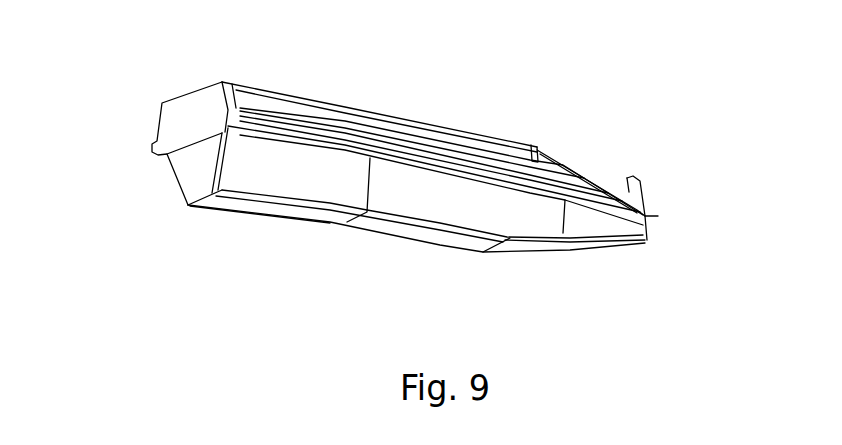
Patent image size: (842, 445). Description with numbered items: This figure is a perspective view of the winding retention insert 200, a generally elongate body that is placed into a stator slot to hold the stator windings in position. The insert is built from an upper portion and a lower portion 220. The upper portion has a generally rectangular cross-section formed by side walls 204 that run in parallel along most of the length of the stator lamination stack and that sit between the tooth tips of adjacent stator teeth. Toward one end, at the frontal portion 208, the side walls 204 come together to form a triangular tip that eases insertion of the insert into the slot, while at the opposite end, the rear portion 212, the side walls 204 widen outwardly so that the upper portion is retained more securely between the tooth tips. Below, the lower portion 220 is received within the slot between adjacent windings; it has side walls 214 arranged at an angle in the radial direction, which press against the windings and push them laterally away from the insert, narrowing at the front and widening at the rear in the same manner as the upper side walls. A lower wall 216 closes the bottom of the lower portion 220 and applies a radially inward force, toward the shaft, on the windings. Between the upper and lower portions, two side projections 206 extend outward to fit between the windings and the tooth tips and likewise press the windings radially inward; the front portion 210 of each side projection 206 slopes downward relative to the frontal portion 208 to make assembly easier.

The winding retention insert 200 is at (605, 78).
The side walls 204 is at (440, 120).
The side projections 206 is at (533, 142).
The frontal portion 208 is at (629, 186).
The front portion 210 is at (658, 216).
The rear portion 212 is at (246, 91).
The side walls 214 is at (458, 203).
The lower wall 216 is at (292, 213).
The lower portion 220 is at (202, 268).